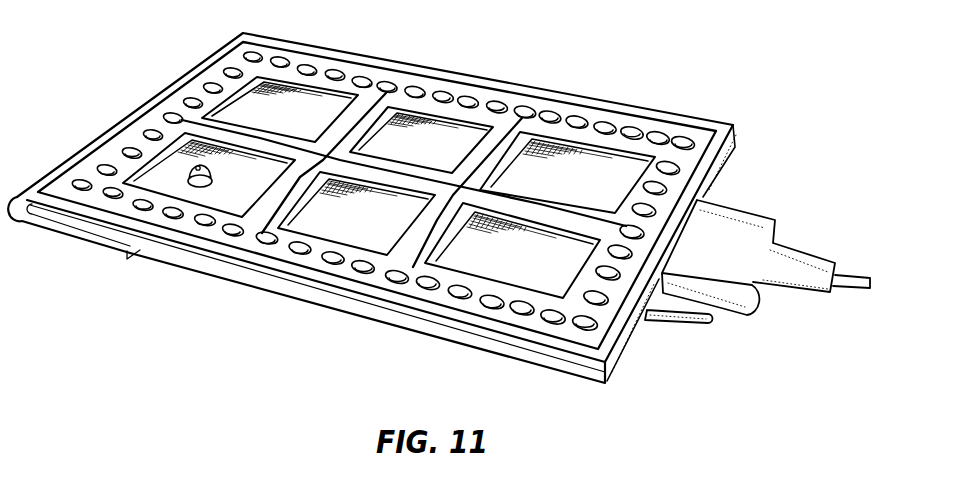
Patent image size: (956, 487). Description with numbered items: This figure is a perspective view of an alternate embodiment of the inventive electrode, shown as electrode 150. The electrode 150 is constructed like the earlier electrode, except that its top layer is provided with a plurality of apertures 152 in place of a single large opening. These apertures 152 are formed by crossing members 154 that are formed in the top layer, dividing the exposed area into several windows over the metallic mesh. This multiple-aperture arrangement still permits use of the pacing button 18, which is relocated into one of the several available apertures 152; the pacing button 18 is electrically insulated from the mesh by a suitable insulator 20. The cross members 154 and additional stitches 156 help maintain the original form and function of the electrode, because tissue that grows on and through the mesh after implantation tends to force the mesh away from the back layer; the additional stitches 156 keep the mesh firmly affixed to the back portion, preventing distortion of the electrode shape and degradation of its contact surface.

The electrode 150 is at (439, 202).
The apertures 152 is at (622, 186).
The crossing members 154 is at (526, 106).
The additional stitches 156 is at (390, 81).
The pacing button 18 is at (197, 167).
The insulator 20 is at (212, 178).